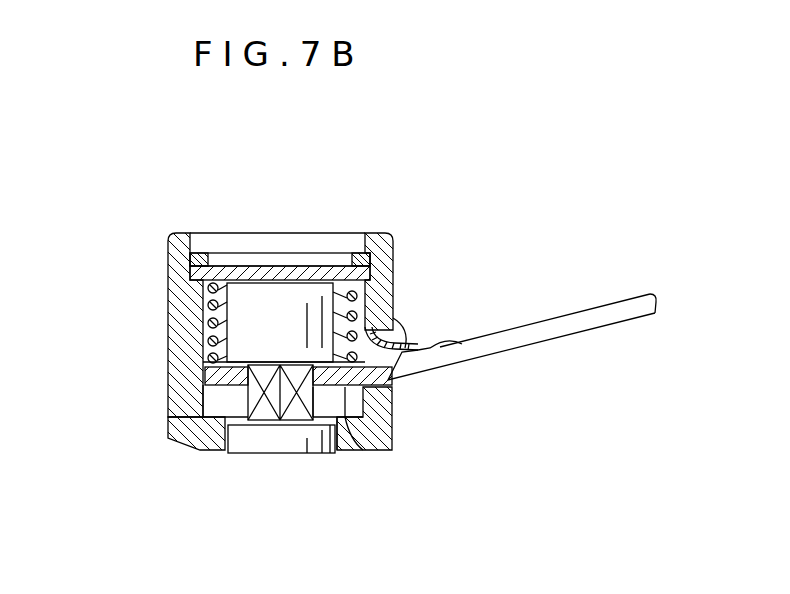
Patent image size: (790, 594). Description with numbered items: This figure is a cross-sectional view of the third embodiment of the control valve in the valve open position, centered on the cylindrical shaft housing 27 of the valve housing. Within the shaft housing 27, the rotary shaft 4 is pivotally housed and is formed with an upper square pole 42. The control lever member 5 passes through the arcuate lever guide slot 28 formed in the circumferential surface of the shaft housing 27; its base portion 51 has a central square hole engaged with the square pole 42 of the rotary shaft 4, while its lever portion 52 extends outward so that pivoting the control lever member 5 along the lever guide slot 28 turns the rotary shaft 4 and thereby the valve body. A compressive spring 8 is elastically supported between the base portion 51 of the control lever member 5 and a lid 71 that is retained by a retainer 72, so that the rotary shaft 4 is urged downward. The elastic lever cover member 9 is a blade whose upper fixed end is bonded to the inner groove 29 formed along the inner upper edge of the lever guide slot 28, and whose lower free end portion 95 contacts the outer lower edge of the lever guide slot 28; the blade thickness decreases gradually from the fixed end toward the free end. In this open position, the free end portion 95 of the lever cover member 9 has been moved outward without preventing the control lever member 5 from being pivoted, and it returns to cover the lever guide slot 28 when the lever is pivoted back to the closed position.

The rotary shaft 4 is at (258, 297).
The control lever member 5 is at (601, 304).
The spring 8 is at (210, 313).
The lever cover member 9 is at (395, 333).
The cylindrical shaft housing 27 is at (210, 427).
The lever guide slot 28 is at (395, 392).
The inner groove 29 is at (397, 323).
The square pole 42 is at (282, 423).
The base portion 51 is at (357, 447).
The lever portion 52 is at (623, 320).
The lid 71 is at (330, 265).
The retainer 72 is at (297, 275).
The free end portion 95 is at (462, 343).